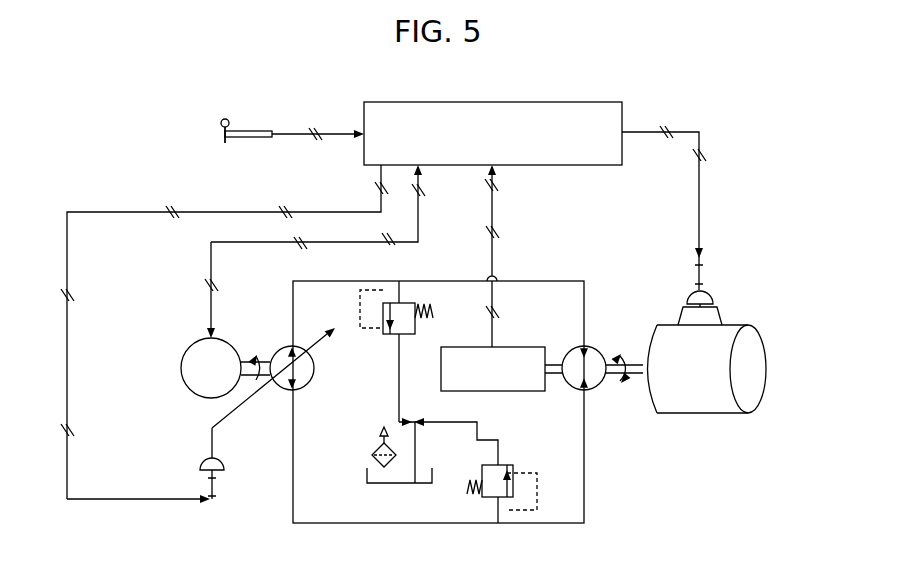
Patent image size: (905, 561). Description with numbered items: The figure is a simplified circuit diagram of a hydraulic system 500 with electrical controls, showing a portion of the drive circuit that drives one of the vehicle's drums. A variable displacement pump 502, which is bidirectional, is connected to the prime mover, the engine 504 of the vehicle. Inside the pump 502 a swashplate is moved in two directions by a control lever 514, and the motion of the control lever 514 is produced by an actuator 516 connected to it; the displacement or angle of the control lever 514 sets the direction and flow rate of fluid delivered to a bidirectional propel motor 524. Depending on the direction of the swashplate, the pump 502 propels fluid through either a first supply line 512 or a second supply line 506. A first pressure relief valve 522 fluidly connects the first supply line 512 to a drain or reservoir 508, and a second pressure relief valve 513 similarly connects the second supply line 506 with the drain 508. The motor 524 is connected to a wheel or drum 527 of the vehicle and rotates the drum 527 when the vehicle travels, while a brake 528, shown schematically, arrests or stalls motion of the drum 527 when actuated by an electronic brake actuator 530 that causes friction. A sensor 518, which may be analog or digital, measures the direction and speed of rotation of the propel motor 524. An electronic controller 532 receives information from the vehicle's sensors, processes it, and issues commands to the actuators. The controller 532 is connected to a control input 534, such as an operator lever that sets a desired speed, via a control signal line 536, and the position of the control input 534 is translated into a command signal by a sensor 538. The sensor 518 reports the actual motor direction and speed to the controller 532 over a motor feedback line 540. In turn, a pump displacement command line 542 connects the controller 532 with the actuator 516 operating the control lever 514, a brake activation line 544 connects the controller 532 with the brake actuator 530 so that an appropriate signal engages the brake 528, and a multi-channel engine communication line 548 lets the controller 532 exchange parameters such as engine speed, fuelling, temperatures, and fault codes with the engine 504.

The hydraulic system 500 is at (176, 129).
The variable displacement pump 502 is at (302, 374).
The engine 504 is at (195, 353).
The second supply line 506 is at (338, 523).
The drain or reservoir 508 is at (390, 484).
The first supply line 512 is at (310, 281).
The second pressure relief valve 513 is at (507, 468).
The control lever 514 is at (236, 412).
The actuator 516 is at (223, 470).
The sensor 518 is at (455, 392).
The first pressure relief valve 522 is at (387, 332).
The bidirectional propel motor 524 is at (597, 376).
The drum 527 is at (698, 408).
The brake 528 is at (722, 311).
The brake actuator 530 is at (702, 297).
The electronic controller 532 is at (580, 101).
The control input 534 is at (226, 118).
The control signal line 536 is at (331, 133).
The sensor 538 is at (242, 130).
The motor feedback line 540 is at (491, 220).
The pump displacement command line 542 is at (213, 211).
The brake activation line 544 is at (681, 131).
The multi-channel engine communication line 548 is at (325, 241).